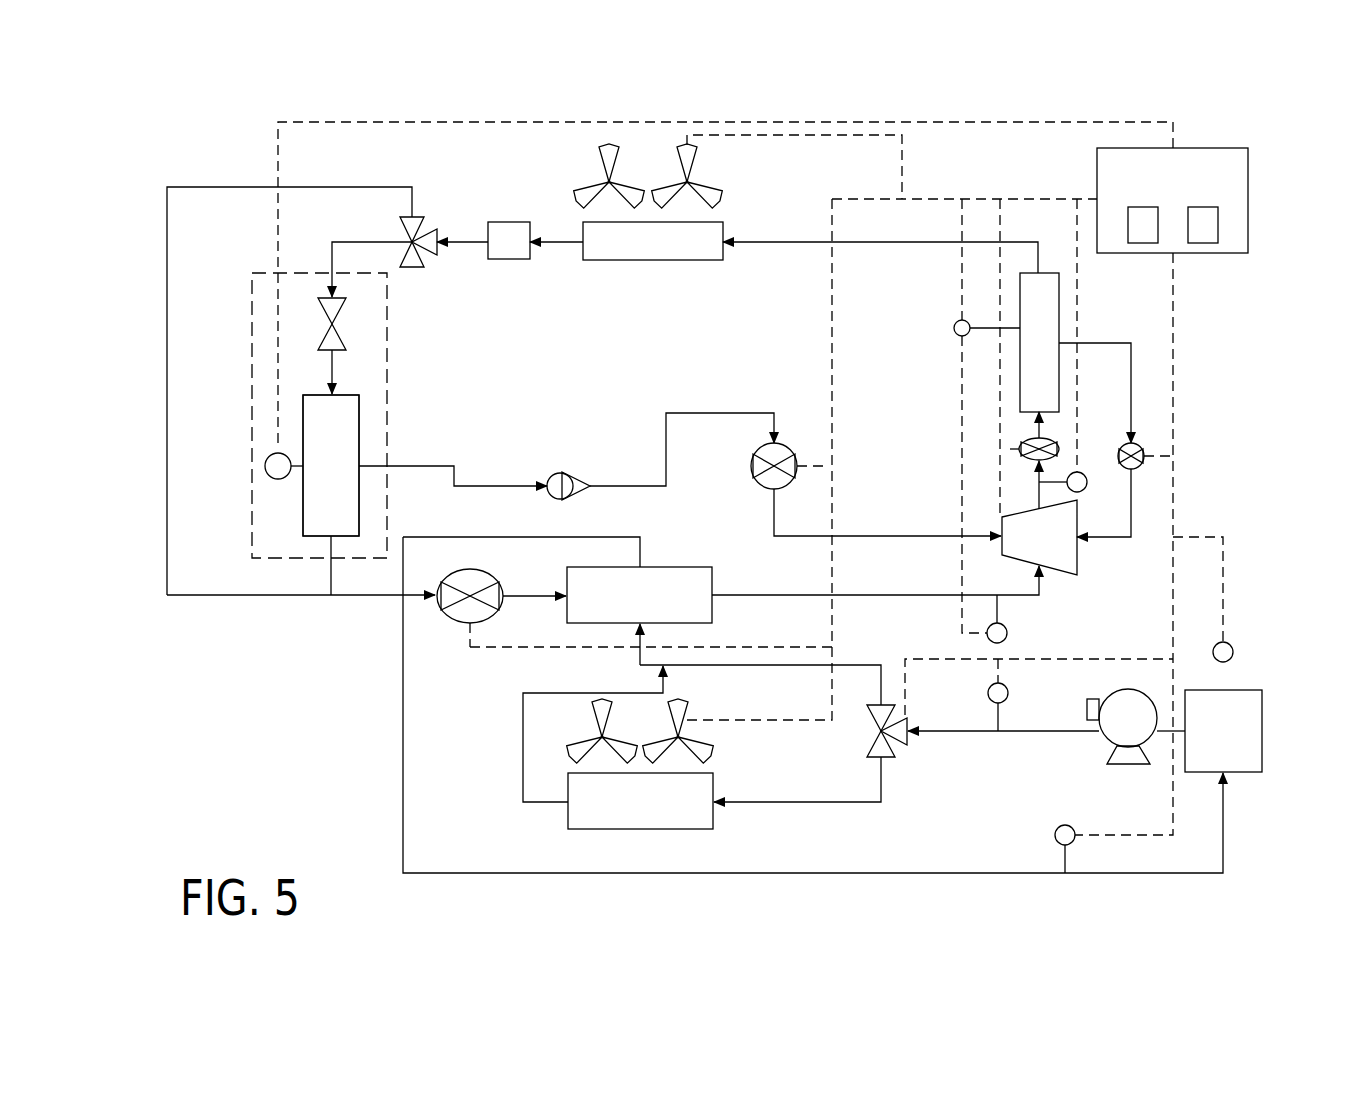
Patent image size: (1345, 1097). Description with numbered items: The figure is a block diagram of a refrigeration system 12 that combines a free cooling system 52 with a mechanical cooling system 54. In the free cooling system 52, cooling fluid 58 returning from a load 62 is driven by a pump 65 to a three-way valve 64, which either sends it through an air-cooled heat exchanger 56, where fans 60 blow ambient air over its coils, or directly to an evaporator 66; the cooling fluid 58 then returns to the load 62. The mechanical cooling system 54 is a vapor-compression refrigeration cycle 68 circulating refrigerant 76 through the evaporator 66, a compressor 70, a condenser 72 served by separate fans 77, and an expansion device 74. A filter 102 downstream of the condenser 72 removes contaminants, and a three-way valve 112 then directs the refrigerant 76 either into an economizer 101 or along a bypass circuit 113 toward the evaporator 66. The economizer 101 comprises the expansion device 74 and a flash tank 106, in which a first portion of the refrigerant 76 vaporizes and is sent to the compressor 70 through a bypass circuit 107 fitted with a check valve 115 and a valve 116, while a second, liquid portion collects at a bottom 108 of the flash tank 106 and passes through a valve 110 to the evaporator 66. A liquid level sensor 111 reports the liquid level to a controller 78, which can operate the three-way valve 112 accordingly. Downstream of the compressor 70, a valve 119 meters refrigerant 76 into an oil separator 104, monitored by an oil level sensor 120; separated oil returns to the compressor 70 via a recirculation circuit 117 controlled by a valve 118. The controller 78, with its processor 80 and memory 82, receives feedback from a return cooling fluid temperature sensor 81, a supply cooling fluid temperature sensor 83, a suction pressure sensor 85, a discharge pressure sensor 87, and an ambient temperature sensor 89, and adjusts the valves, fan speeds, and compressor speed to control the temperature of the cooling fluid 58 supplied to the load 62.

The refrigeration system 12 is at (1266, 121).
The free cooling system 52 is at (706, 848).
The mechanical cooling system 54 is at (491, 179).
The air-cooled heat exchanger 56 is at (640, 830).
The cooling fluid 58 is at (762, 665).
The fans 60 is at (592, 732).
The load 62 is at (1262, 728).
The three-way valve 64 is at (897, 723).
The pump 65 is at (1150, 695).
The evaporator 66 is at (712, 605).
The vapor-compression refrigeration cycle 68 is at (560, 379).
The compressor 70 is at (1062, 575).
The condenser 72 is at (700, 260).
The expansion device 74 is at (340, 336).
The refrigerant 76 is at (372, 242).
The fans 77 is at (596, 183).
The controller 78 is at (1197, 148).
The processor 80 is at (1142, 243).
The memory 82 is at (1205, 243).
The return cooling fluid temperature sensor 81 is at (1008, 688).
The supply cooling fluid temperature sensor 83 is at (1057, 828).
The suction pressure sensor 85 is at (1007, 638).
The discharge pressure sensor 87 is at (1080, 472).
The ambient temperature sensor 89 is at (1232, 648).
The economizer 101 is at (393, 410).
The filter 102 is at (502, 260).
The oil separator 104 is at (1048, 272).
The flash tank 106 is at (362, 430).
The bypass circuit 107 is at (528, 471).
The bottom of the flash tank 108 is at (326, 507).
The valve 110 is at (468, 570).
The liquid level sensor 111 is at (275, 480).
The three-way valve 112 is at (418, 215).
The bypass circuit 113 is at (140, 372).
The check valve 115 is at (558, 472).
The valve 116 is at (784, 442).
The recirculation circuit 117 is at (1146, 411).
The valve 118 is at (1140, 470).
The valve 119 is at (1010, 449).
The oil level sensor 120 is at (954, 328).